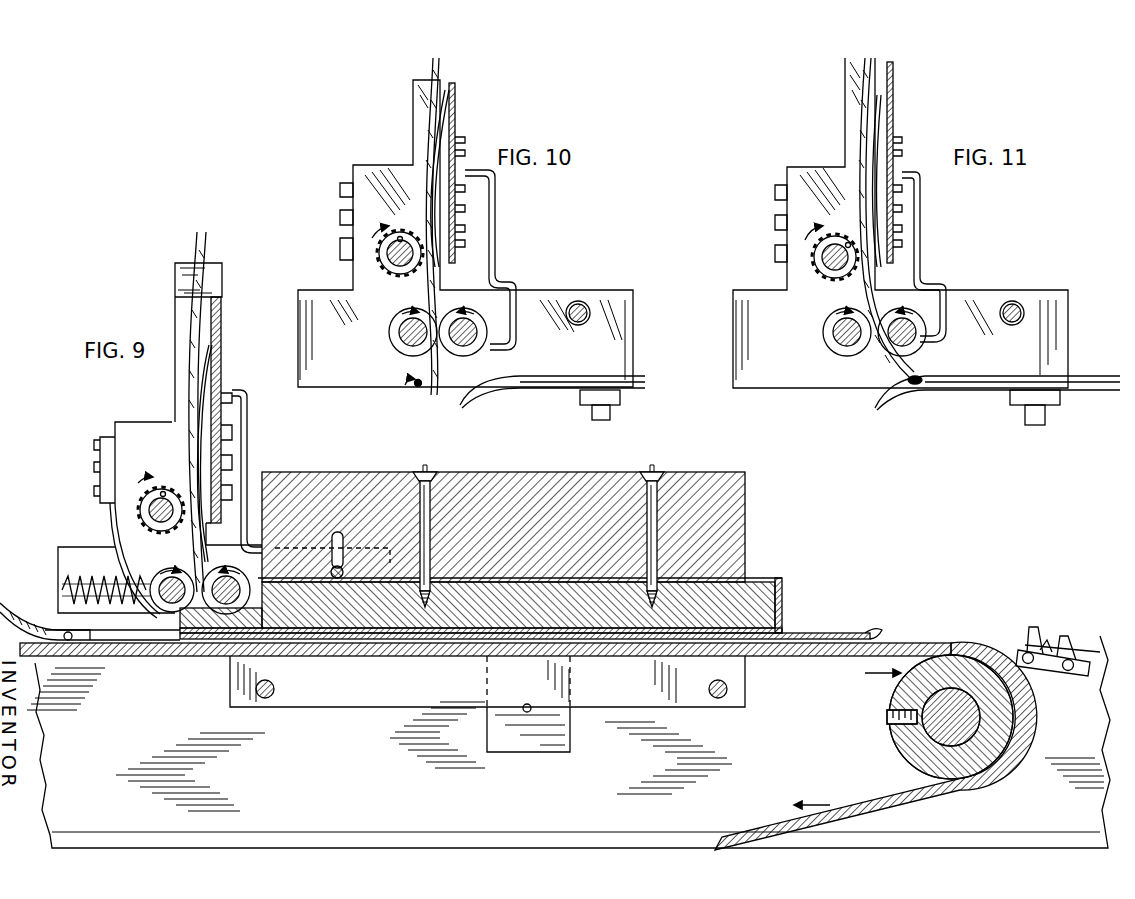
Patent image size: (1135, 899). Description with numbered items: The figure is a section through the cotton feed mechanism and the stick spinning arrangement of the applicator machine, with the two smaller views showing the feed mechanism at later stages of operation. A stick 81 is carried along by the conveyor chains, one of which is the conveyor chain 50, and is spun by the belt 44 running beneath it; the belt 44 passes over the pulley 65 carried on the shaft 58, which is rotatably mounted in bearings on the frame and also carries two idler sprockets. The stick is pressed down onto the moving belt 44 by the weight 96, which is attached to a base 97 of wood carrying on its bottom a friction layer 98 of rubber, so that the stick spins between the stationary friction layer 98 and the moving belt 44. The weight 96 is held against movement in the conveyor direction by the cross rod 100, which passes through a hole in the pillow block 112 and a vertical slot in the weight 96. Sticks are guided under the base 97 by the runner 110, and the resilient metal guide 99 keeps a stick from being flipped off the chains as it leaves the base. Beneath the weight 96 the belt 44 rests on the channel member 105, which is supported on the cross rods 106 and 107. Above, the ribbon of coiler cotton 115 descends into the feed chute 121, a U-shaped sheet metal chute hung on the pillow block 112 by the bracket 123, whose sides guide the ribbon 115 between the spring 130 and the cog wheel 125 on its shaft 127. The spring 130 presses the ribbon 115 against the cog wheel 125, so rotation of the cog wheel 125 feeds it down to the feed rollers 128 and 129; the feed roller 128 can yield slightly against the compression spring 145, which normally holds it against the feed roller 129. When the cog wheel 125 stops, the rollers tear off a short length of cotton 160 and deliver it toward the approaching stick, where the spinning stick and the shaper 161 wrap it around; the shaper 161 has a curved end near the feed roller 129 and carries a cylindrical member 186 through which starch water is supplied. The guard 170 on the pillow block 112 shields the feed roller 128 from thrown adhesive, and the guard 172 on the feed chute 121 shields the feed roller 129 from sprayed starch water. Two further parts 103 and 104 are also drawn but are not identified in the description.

In FIG. 9, the belt 44 is at (140, 657).
In FIG. 9, the conveyor chain 50 is at (1108, 652).
In FIG. 9, the shaft 58 is at (935, 740).
In FIG. 9, the pulley 65 is at (895, 727).
In FIG. 9, the stick 81 is at (72, 638).
In FIG. 10, the stick 81 is at (414, 389).
In FIG. 11, the stick 81 is at (917, 388).
In FIG. 9, the weight 96 is at (735, 512).
In FIG. 9, the base 97 is at (746, 596).
In FIG. 9, the friction layer 98 is at (638, 640).
In FIG. 9, the resilient metal guide 99 is at (784, 598).
In FIG. 9, the cross rod 100 is at (346, 572).
In FIG. 9, the screw 103 is at (374, 525).
In FIG. 9, the locating pin 104 is at (344, 545).
In FIG. 9, the channel member 105 is at (308, 695).
In FIG. 9, the cross rod 106 is at (260, 698).
In FIG. 9, the cross rod 107 is at (720, 700).
In FIG. 9, the runner 110 is at (40, 608).
In FIG. 9, the pillow block 112 is at (76, 548).
In FIG. 10, the pillow block 112 is at (366, 205).
In FIG. 11, the pillow block 112 is at (975, 295).
In FIG. 9, the ribbon of coiler cotton 115 is at (208, 247).
In FIG. 10, the ribbon of coiler cotton 115 is at (435, 118).
In FIG. 11, the ribbon of coiler cotton 115 is at (860, 130).
In FIG. 9, the feed chute 121 is at (222, 295).
In FIG. 9, the bracket 123 is at (222, 472).
In FIG. 9, the cog wheel 125 is at (150, 515).
In FIG. 10, the cog wheel 125 is at (388, 266).
In FIG. 11, the cog wheel 125 is at (820, 272).
In FIG. 9, the shaft 127 is at (166, 492).
In FIG. 9, the feed roller 128 is at (163, 576).
In FIG. 10, the feed roller 128 is at (389, 332).
In FIG. 11, the feed roller 128 is at (823, 332).
In FIG. 9, the feed roller 129 is at (234, 572).
In FIG. 10, the feed roller 129 is at (480, 345).
In FIG. 11, the feed roller 129 is at (912, 325).
In FIG. 9, the spring 130 is at (213, 384).
In FIG. 10, the spring 130 is at (437, 218).
In FIG. 11, the spring 130 is at (910, 202).
In FIG. 9, the compression spring 145 is at (107, 580).
In FIG. 10, the length of cotton 160 is at (438, 380).
In FIG. 11, the length of cotton 160 is at (888, 378).
In FIG. 9, the shaper 161 is at (872, 631).
In FIG. 10, the shaper 161 is at (538, 389).
In FIG. 11, the shaper 161 is at (982, 380).
In FIG. 9, the guard 170 is at (106, 470).
In FIG. 9, the guard 172 is at (246, 447).
In FIG. 11, the cylindrical member 186 is at (1015, 402).